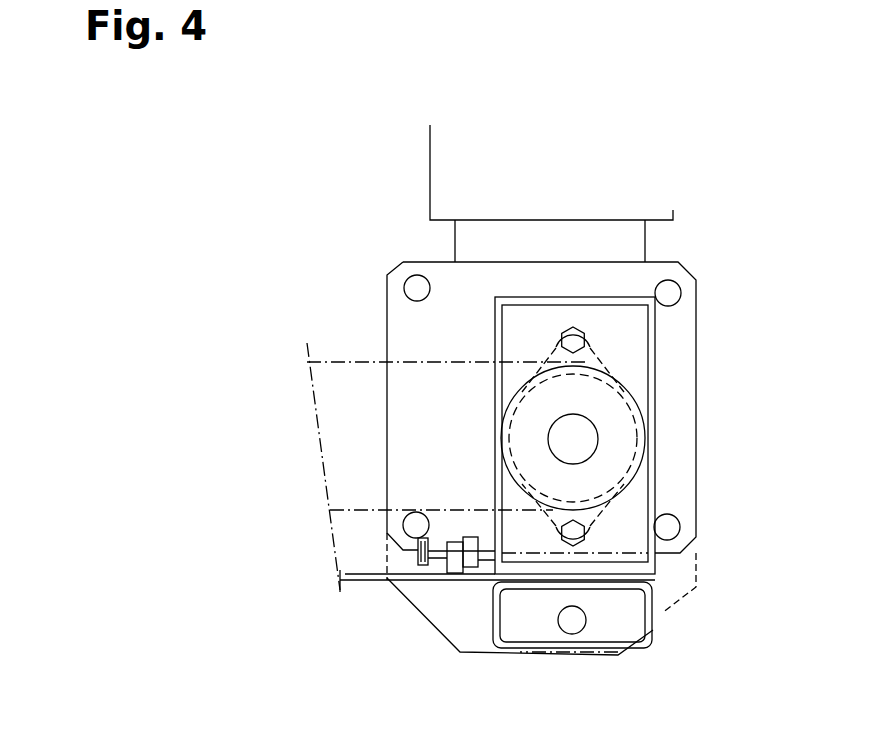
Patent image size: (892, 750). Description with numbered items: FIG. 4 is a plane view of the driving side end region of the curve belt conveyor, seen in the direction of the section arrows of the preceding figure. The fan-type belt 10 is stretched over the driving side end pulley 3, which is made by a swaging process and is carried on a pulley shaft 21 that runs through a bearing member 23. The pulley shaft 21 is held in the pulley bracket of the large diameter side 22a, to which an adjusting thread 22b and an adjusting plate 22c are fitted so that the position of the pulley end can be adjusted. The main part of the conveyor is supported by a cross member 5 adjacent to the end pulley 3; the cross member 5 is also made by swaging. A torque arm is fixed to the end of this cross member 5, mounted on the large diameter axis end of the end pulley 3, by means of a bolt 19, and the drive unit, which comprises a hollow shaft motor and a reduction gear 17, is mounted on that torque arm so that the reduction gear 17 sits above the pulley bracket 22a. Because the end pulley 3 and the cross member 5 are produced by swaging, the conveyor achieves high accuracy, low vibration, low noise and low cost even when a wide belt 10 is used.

The end pulley 3 is at (640, 393).
The cross member 5 is at (632, 613).
The fan-type belt 10 is at (340, 358).
The reduction gear 17 is at (438, 193).
The bolt 19 is at (572, 620).
The pulley shaft 21 is at (578, 444).
The pulley bracket of a large diameter side 22a is at (652, 500).
The adjusting thread 22b is at (440, 553).
The adjusting plate 22c is at (458, 570).
The bearing member 23 is at (622, 453).